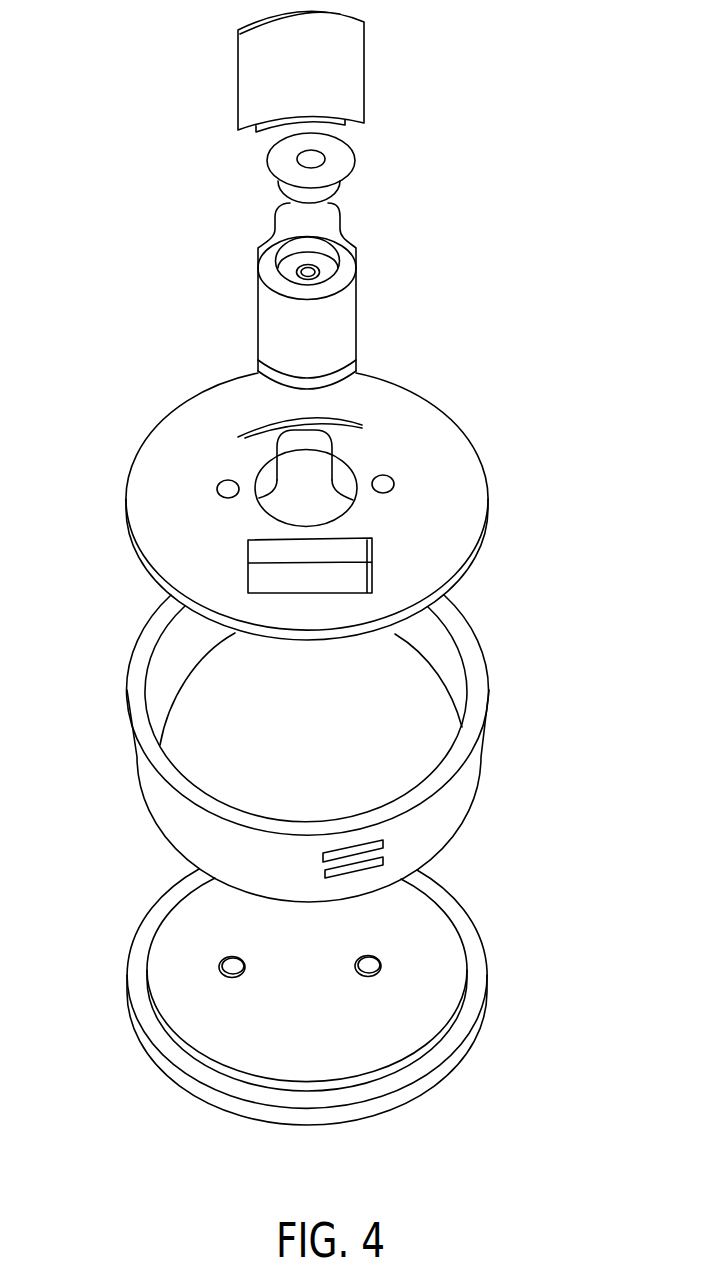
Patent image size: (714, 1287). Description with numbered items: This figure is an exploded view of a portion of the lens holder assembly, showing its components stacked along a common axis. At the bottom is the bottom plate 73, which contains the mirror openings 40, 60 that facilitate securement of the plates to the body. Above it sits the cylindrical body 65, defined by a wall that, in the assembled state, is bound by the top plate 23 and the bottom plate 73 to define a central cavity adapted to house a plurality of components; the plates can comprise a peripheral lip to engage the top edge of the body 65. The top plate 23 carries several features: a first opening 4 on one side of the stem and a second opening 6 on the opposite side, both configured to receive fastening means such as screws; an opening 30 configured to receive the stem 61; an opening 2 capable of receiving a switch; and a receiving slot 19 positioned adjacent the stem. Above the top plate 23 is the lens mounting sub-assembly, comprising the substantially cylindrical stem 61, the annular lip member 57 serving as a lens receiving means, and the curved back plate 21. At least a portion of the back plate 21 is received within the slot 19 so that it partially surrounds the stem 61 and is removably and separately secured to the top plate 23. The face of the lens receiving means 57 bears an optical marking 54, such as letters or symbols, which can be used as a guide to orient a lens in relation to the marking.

The opening 2 is at (318, 572).
The first opening 4 is at (223, 490).
The second opening 6 is at (385, 484).
The receiving slot 19 is at (240, 436).
The back plate 21 is at (265, 88).
The top plate 23 is at (437, 515).
The opening 30 is at (315, 468).
The mirror opening 40 is at (223, 967).
The optical marking 54 is at (322, 175).
The annular lip member 57 is at (355, 157).
The mirror opening 60 is at (383, 967).
The stem 61 is at (268, 322).
The body 65 is at (467, 770).
The bottom plate 73 is at (170, 1062).